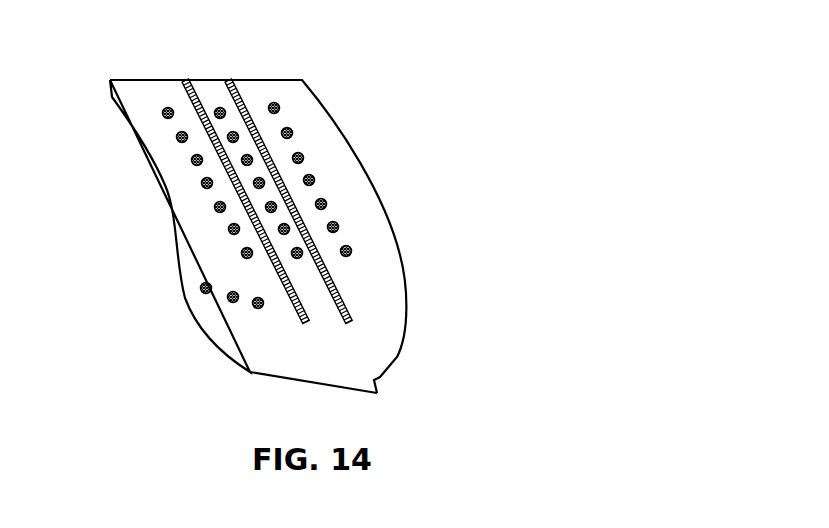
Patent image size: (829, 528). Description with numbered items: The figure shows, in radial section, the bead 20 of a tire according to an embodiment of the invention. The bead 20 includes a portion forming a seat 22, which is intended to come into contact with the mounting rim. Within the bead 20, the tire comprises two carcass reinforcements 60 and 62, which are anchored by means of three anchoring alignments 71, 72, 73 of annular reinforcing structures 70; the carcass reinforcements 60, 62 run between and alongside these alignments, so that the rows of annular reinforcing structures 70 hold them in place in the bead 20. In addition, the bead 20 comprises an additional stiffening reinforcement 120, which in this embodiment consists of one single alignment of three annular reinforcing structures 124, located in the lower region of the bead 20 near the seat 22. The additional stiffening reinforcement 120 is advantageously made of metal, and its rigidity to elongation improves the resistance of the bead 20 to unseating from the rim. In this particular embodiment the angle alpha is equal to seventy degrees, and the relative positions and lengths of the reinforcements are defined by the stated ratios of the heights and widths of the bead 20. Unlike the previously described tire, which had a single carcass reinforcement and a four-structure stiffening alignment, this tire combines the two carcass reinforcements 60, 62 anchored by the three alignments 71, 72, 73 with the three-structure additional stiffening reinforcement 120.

The bead 20 is at (420, 166).
The seat 22 is at (310, 391).
The carcass reinforcement 60 is at (299, 315).
The carcass reinforcement 62 is at (345, 291).
The annular reinforcing structures 70 is at (203, 185).
The anchoring alignment 71 is at (158, 93).
The anchoring alignment 72 is at (209, 93).
The anchoring alignment 73 is at (267, 90).
The additional stiffening reinforcement 120 is at (180, 281).
The annular reinforcing structure 124 is at (232, 302).